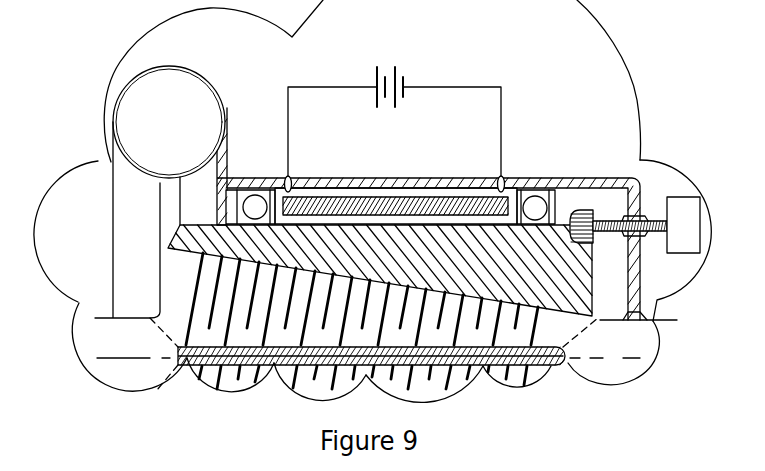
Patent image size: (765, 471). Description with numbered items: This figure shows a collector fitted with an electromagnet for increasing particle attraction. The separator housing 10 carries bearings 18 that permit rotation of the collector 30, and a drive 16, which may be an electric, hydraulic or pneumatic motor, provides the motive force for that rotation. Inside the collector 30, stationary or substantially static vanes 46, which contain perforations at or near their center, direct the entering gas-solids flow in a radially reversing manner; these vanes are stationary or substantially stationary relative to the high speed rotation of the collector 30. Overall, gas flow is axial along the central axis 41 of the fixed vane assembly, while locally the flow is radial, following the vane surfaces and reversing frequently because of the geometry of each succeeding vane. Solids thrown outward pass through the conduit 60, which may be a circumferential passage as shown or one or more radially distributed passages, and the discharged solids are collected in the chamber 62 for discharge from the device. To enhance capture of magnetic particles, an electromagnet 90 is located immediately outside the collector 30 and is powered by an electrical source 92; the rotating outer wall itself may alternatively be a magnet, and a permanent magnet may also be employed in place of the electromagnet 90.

The separator housing 10 is at (507, 178).
The drive 16 is at (635, 225).
The bearings 18 is at (560, 179).
The collector 30 is at (380, 270).
The central axis 41 is at (148, 357).
The stationary vanes 46 is at (213, 295).
The conduit 60 is at (168, 207).
The chamber 62 is at (170, 123).
The electromagnet 90 is at (347, 205).
The electrical source 92 is at (398, 72).